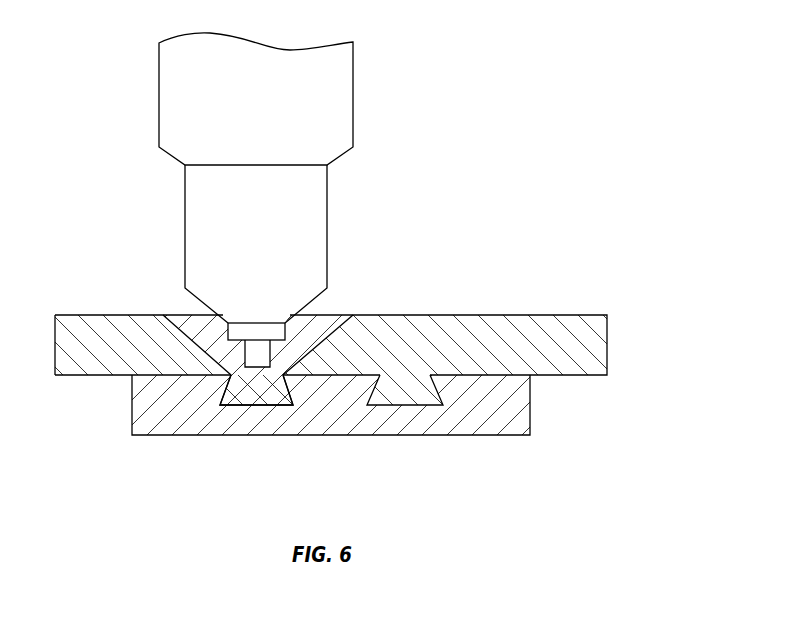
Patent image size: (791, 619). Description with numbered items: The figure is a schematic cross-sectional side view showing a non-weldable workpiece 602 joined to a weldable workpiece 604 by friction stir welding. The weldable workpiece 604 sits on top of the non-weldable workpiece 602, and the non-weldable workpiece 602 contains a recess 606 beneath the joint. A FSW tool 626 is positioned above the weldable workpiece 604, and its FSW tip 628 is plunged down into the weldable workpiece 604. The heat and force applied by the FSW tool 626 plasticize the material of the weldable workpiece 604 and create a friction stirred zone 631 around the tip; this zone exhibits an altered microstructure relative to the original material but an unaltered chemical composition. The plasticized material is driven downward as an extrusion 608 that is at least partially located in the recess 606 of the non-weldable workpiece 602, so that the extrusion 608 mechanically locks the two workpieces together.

The non-weldable workpiece 602 is at (531, 410).
The weldable workpiece 604 is at (608, 343).
The recess 606 is at (270, 406).
The extrusion 608 is at (243, 398).
The FSW tool 626 is at (360, 220).
The FSW tip 628 is at (287, 330).
The friction stirred zone 631 is at (193, 325).